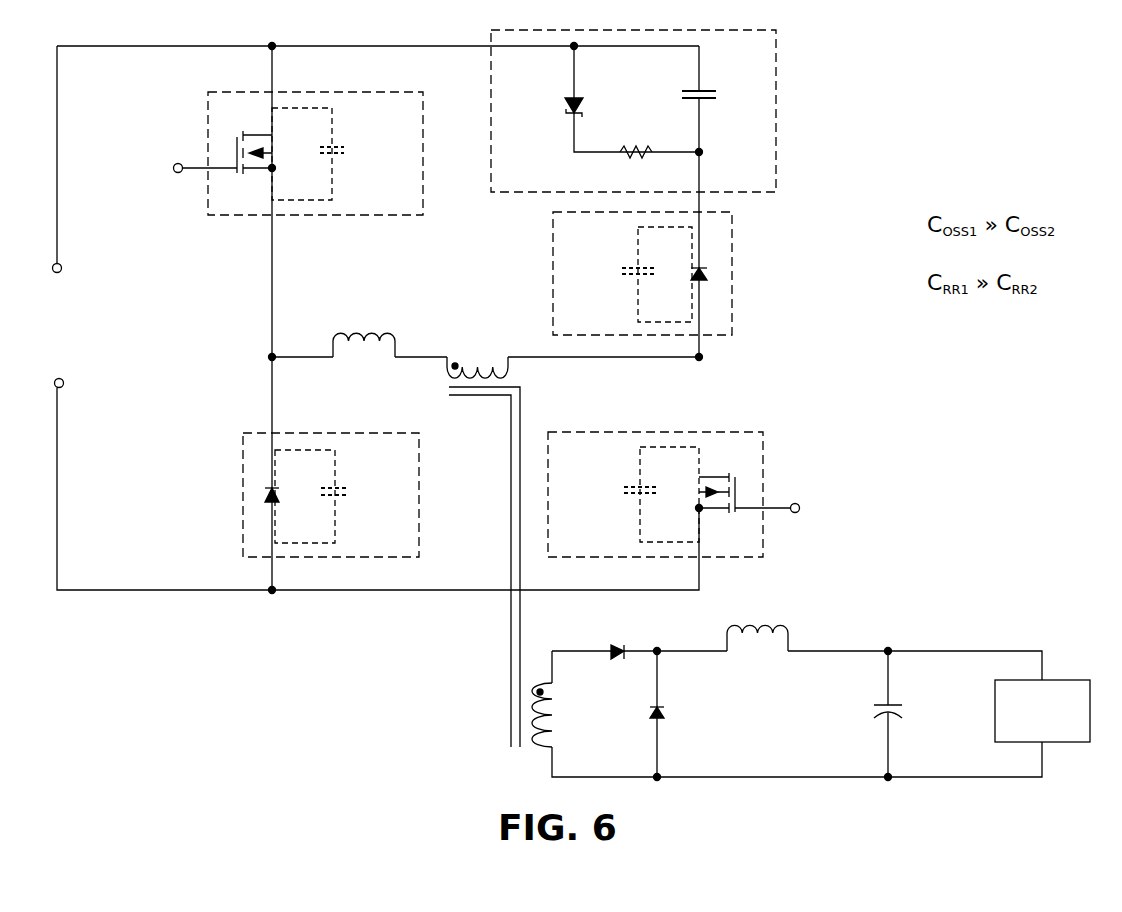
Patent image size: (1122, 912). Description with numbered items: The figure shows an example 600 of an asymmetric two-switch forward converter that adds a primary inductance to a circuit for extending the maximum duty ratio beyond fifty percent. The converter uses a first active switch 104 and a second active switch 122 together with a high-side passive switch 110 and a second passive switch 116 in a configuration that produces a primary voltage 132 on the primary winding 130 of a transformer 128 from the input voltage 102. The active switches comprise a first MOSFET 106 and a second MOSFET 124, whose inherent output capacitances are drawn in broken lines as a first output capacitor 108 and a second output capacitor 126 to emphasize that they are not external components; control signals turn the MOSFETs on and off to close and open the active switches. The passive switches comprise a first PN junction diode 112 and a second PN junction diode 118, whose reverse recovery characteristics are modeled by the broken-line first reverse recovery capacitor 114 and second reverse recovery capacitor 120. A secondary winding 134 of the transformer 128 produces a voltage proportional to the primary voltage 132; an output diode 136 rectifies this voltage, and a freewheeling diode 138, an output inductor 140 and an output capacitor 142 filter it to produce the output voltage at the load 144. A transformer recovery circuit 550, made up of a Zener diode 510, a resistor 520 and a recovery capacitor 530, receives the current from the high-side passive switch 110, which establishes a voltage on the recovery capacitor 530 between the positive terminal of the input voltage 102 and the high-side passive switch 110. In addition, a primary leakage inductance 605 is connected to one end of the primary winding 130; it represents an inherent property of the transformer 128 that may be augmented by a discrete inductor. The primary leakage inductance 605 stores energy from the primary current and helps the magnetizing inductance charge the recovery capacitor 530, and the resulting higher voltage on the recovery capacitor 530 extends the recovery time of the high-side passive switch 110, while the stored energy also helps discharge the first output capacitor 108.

The input voltage V_IN 102 is at (78, 312).
The active switch Q1 104 is at (208, 92).
The MOSFET 106 is at (262, 135).
The capacitor C_OSS1 108 is at (342, 142).
The passive switch D1 110 is at (732, 243).
The PN junction diode 112 is at (693, 270).
The capacitor C_RR1 114 is at (630, 262).
The passive switch D2 116 is at (243, 433).
The PN junction diode 118 is at (285, 495).
The capacitor C_RR2 120 is at (343, 482).
The active switch Q2 122 is at (763, 432).
The MOSFET 124 is at (712, 470).
The capacitor C_OSS2 126 is at (630, 478).
The transformer T1 128 is at (507, 413).
The primary winding 130 is at (518, 372).
The voltage V_P 132 is at (482, 326).
The secondary winding 134 is at (553, 713).
The output diode 136 is at (607, 643).
The freewheeling diode 138 is at (670, 723).
The output inductor L1 140 is at (768, 616).
The output capacitor C1 142 is at (877, 698).
The load 144 is at (1050, 672).
The Zener diode VR1 510 is at (560, 90).
The resistor R1 520 is at (647, 140).
The capacitor C3 530 is at (690, 84).
The transformer recovery circuit 550 is at (777, 97).
The primary leakage inductance L_LP 605 is at (363, 325).
The asymmetric two-switch forward converter 600 is at (290, 676).